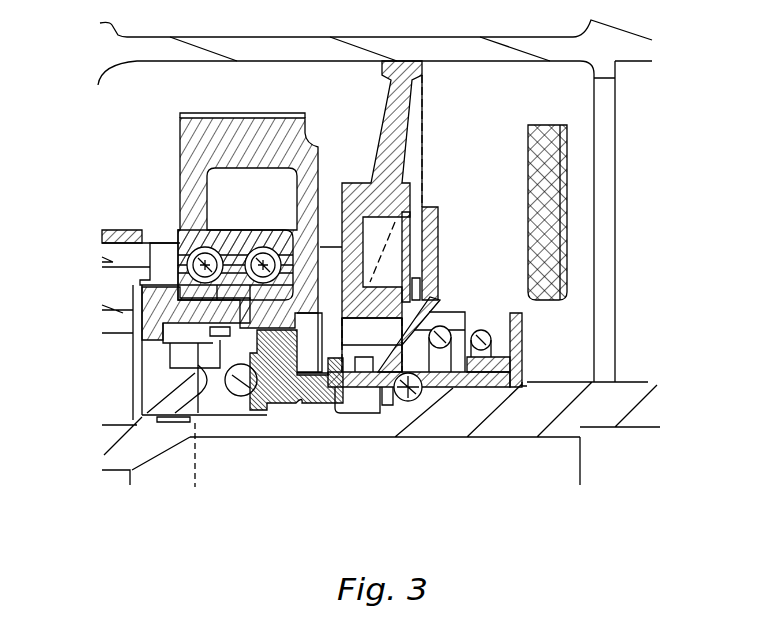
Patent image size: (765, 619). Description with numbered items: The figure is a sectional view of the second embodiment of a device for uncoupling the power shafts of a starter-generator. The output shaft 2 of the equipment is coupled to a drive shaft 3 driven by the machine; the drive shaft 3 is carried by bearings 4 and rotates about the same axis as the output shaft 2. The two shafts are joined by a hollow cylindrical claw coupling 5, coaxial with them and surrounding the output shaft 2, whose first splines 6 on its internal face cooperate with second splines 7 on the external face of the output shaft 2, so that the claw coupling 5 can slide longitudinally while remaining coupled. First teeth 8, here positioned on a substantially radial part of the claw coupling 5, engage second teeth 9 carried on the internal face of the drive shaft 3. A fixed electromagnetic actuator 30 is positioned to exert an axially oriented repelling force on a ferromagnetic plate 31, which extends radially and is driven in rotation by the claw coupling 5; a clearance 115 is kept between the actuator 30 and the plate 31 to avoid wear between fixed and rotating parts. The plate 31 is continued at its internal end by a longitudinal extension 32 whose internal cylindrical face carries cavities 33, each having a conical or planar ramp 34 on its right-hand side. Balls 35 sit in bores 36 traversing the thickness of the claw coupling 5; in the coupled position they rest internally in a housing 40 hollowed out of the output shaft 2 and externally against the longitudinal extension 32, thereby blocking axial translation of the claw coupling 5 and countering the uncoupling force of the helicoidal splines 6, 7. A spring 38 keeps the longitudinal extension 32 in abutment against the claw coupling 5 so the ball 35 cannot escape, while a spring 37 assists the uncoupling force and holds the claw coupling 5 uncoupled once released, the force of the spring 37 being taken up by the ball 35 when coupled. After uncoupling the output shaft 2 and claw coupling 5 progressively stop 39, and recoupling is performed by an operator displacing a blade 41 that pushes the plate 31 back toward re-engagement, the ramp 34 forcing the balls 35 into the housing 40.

The output shaft 2 is at (115, 459).
The drive shaft 3 is at (190, 146).
The bearings 4 is at (190, 276).
The claw coupling 5 is at (358, 382).
The first splines 6 is at (296, 410).
The second splines 7 is at (327, 388).
The first teeth 8 is at (255, 398).
The second teeth 9 is at (220, 342).
The electromagnetic actuator 30 is at (428, 213).
The ferromagnetic plate 31 is at (430, 248).
The longitudinal extension 32 is at (385, 374).
The cavities 33 is at (372, 350).
The ramp 34 is at (388, 400).
The balls 35 is at (421, 390).
The bores 36 is at (420, 392).
The spring 37 is at (220, 337).
The spring 38 is at (485, 340).
The stop 39 is at (522, 316).
The housing 40 is at (422, 398).
The blade 41 is at (530, 160).
The clearance 115 is at (418, 283).